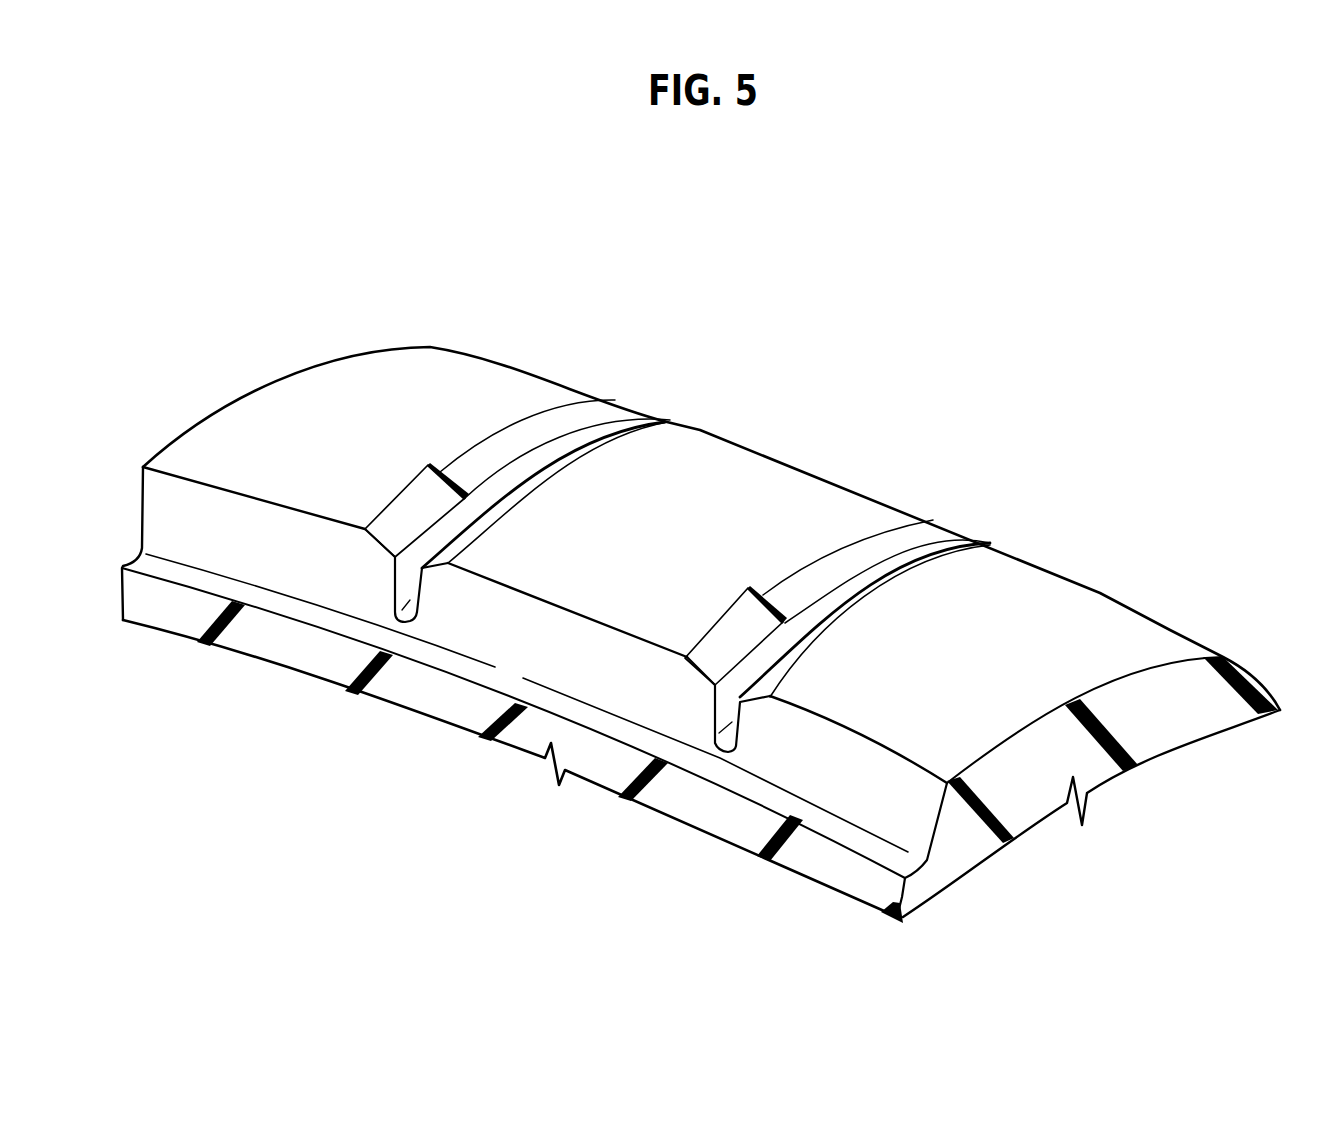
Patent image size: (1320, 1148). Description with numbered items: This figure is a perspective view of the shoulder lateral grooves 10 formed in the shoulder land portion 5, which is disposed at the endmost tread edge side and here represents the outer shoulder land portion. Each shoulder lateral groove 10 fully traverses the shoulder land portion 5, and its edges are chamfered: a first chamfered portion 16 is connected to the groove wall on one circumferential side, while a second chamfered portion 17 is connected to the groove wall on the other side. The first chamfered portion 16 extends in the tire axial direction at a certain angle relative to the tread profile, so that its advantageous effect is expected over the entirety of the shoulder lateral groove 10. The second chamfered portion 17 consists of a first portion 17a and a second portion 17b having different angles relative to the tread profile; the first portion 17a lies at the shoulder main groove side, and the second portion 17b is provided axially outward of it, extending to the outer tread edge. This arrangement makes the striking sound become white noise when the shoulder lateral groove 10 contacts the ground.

The shoulder land portion 5 is at (997, 654).
The shoulder lateral groove 10 is at (407, 580).
The first chamfered portion 16 is at (473, 533).
The second chamfered portion 17 is at (583, 444).
The first portion 17a is at (410, 517).
The second portion 17b is at (472, 470).